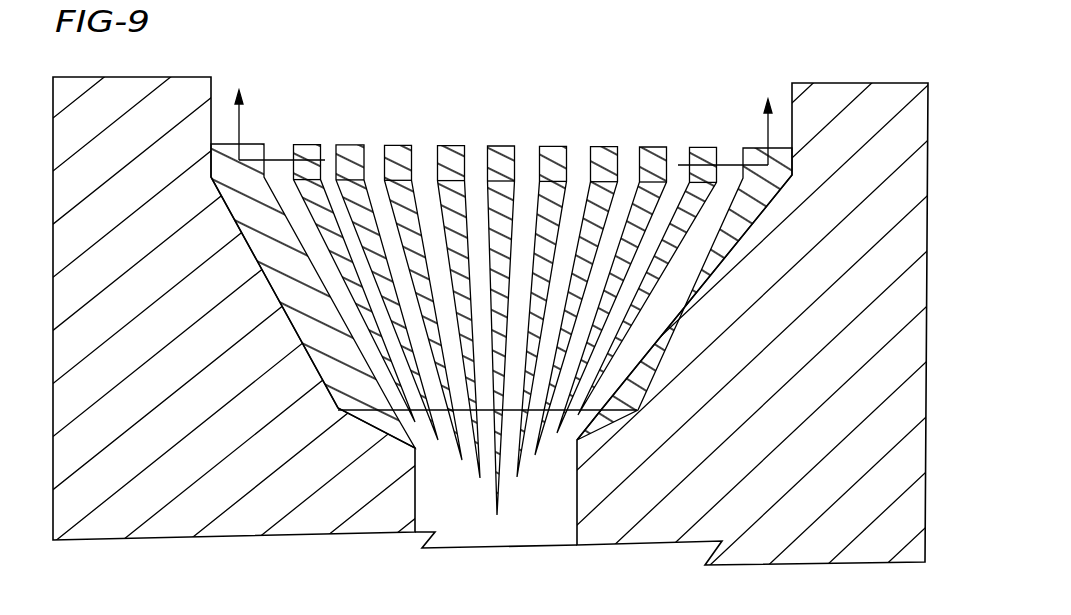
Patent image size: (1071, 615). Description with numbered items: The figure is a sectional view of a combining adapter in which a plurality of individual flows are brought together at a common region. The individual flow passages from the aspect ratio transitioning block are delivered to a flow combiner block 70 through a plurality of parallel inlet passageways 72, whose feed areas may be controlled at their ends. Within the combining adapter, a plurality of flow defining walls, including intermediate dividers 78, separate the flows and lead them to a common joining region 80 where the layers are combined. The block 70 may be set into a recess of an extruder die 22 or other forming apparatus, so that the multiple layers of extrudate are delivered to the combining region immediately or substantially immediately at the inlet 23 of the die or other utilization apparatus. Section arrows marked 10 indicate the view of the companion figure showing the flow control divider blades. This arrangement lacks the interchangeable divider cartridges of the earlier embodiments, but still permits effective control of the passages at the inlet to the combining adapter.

The section line of FIG. 10 is at (505, 111).
The extruder die 22 is at (333, 513).
The inlet 23 is at (550, 505).
The flow combiner block 70 is at (737, 235).
The inlet passageways 72 is at (373, 150).
The intermediate dividers 78 is at (657, 270).
The common joining region 80 is at (523, 468).